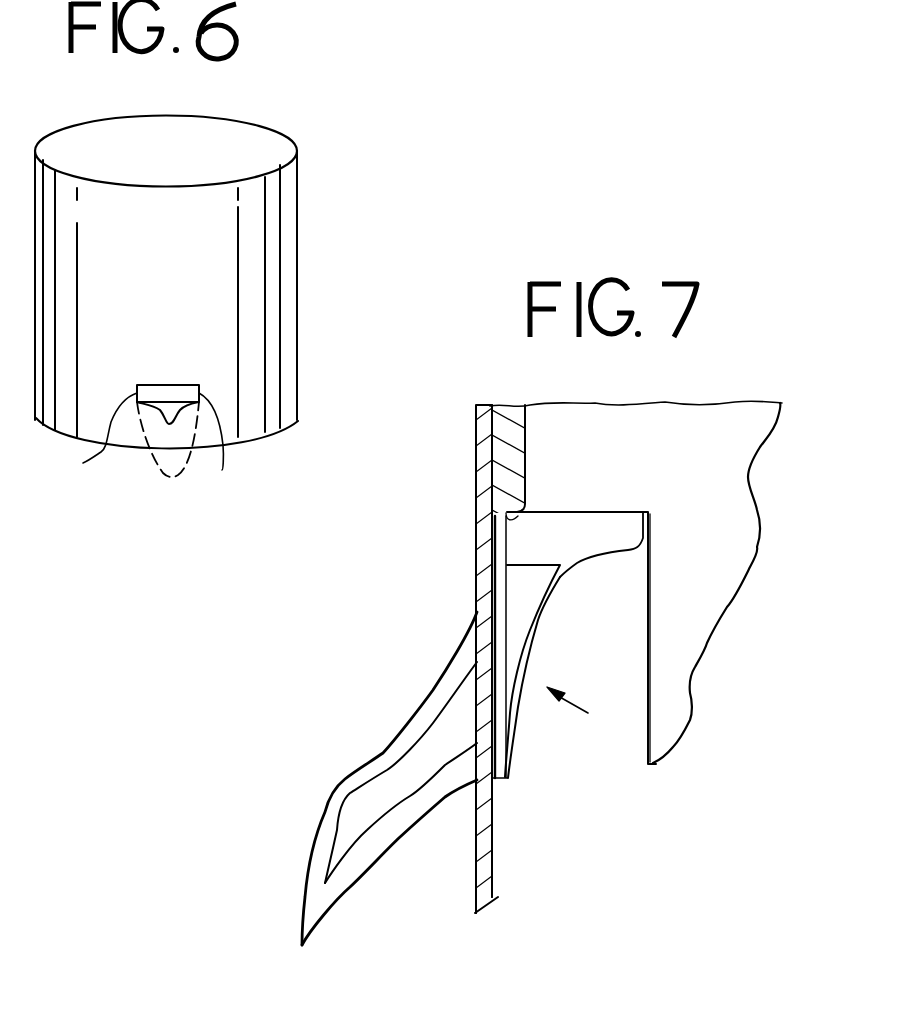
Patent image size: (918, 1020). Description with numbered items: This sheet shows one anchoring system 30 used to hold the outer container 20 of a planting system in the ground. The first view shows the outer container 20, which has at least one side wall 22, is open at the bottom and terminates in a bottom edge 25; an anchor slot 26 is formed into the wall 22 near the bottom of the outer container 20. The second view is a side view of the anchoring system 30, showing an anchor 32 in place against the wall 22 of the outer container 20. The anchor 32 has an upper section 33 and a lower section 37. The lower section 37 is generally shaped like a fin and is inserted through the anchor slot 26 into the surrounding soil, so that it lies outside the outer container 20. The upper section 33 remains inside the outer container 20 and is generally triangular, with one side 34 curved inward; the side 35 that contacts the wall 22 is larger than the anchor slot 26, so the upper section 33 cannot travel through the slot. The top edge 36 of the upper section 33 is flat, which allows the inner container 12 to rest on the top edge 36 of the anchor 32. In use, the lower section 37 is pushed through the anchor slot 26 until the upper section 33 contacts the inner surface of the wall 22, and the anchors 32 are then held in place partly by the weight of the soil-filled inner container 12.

In FIG. 7, the inner container 12 is at (526, 472).
In FIG. 6, the outer container 20 is at (300, 280).
In FIG. 7, the outer container 20 is at (495, 817).
In FIG. 7, the side wall 22 is at (487, 868).
In FIG. 6, the bottom edge 25 is at (287, 428).
In FIG. 6, the anchor slot 26 is at (188, 446).
In FIG. 7, the anchor slot 26 is at (480, 655).
In FIG. 7, the anchoring system 30 is at (585, 711).
In FIG. 6, the anchor 32 is at (90, 438).
In FIG. 7, the anchor 32 is at (362, 863).
In FIG. 7, the upper section 33 is at (584, 554).
In FIG. 7, the side 34 is at (552, 603).
In FIG. 7, the side 35 is at (494, 541).
In FIG. 7, the top edge 36 is at (616, 513).
In FIG. 7, the lower section 37 is at (363, 765).